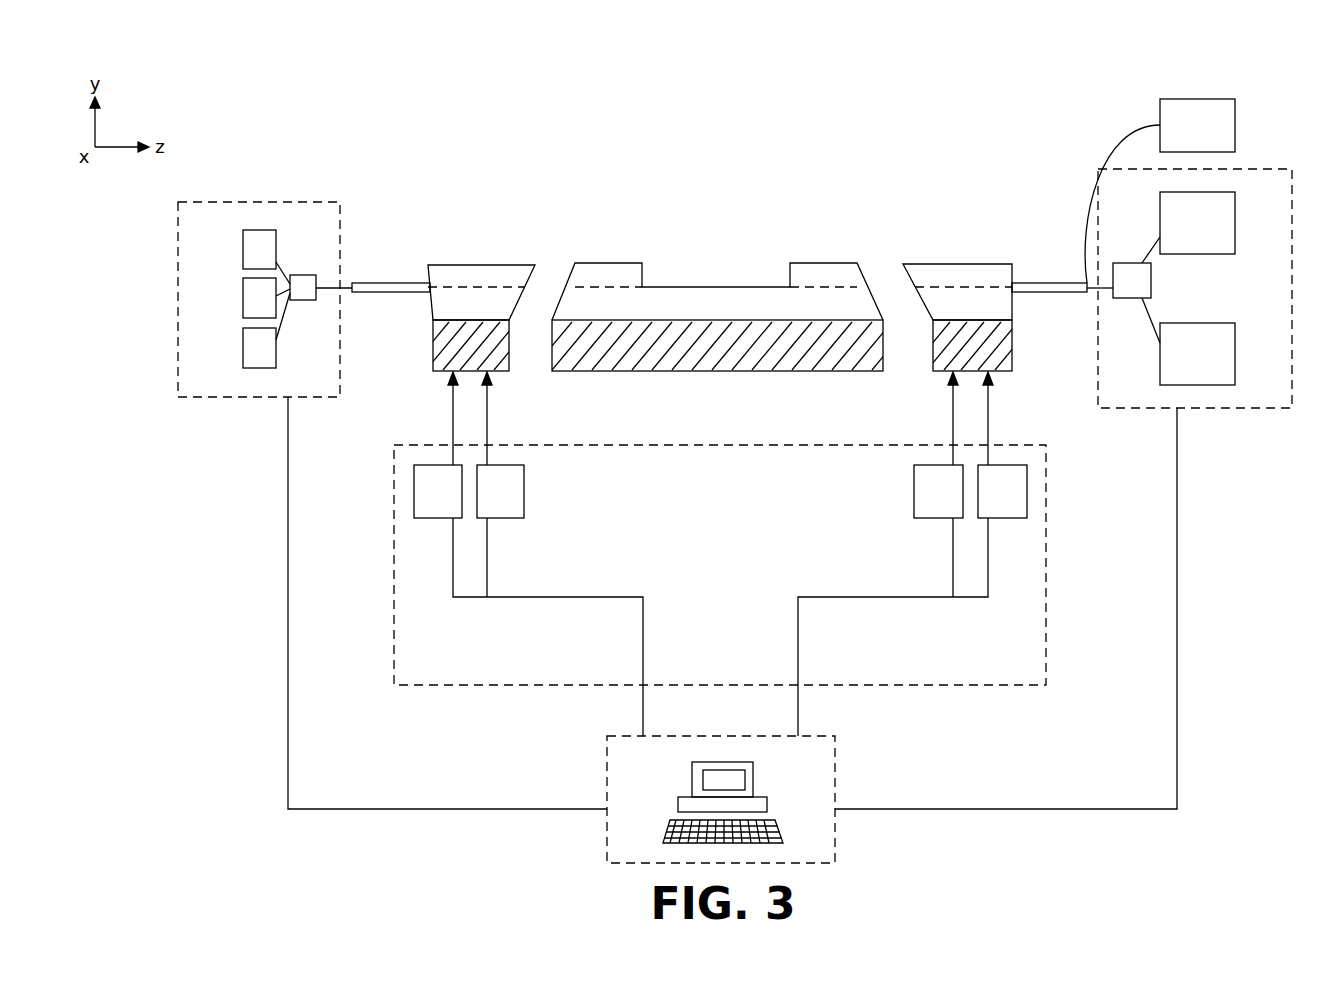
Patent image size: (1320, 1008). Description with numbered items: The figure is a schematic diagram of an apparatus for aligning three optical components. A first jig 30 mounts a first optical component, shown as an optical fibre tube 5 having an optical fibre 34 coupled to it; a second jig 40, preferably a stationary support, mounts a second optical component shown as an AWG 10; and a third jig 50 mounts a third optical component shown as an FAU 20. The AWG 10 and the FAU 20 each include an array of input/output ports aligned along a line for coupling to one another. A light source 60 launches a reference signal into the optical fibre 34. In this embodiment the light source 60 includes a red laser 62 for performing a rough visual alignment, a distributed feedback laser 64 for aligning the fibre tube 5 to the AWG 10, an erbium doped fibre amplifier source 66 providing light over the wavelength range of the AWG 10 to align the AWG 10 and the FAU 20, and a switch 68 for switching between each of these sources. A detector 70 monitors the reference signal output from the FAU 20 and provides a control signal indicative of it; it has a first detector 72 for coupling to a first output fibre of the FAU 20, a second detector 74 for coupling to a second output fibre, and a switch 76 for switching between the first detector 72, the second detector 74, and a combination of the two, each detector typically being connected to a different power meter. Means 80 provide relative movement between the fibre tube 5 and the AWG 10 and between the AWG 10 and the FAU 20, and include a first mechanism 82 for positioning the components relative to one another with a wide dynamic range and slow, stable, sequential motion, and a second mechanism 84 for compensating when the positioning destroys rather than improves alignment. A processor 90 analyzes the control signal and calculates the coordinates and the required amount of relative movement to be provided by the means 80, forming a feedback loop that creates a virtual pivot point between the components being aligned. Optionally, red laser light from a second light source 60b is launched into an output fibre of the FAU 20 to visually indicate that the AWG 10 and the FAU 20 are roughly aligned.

The optical fibre tube 5 is at (480, 265).
The AWG 10 is at (637, 263).
The FAU 20 is at (947, 264).
The first jig 30 is at (510, 358).
The optical fibre 34 is at (378, 282).
The second jig 40 is at (722, 371).
The third jig 50 is at (937, 371).
The light source 60 is at (225, 202).
The second light source 60b is at (1170, 99).
The red laser 62 is at (243, 351).
The distributed feedback (DFB) laser 64 is at (243, 300).
The erbium doped fibre amplifier (EDFA) source 66 is at (243, 252).
The switch 68 is at (297, 275).
The detector 70 is at (1233, 408).
The first detector 72 is at (1235, 225).
The second detector 74 is at (1235, 355).
The switch 76 is at (1151, 287).
The means for providing relative movement 80 is at (1046, 650).
The first mechanism 82 is at (430, 518).
The second mechanism 84 is at (507, 518).
The processor 90 is at (835, 778).